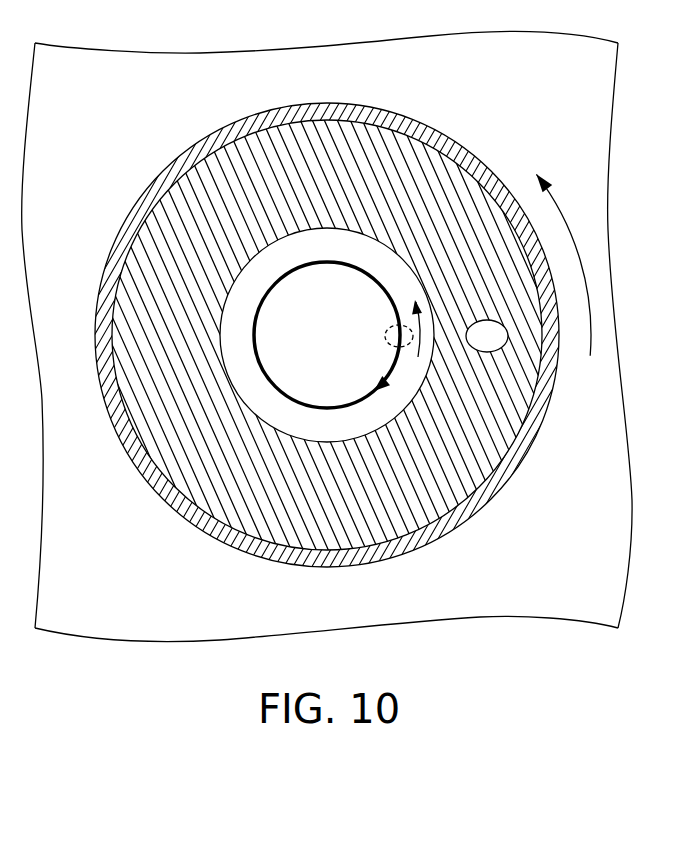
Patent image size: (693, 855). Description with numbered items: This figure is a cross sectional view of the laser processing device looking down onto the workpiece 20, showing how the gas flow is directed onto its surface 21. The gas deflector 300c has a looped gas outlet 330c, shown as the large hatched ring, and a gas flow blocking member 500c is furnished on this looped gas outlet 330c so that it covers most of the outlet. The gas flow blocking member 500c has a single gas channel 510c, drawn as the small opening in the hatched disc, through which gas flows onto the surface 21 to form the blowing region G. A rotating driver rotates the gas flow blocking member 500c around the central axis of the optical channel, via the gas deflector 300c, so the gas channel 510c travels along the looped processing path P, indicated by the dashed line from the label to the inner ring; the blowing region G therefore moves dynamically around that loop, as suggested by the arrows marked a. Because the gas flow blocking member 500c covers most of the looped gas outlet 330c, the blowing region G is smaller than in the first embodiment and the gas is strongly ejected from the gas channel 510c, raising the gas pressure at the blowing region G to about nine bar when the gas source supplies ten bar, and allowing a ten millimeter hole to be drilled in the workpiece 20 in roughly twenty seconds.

The workpiece 20 is at (598, 98).
The surface 21 is at (582, 150).
The gas deflector 300c is at (185, 158).
The looped gas outlet 330c is at (163, 207).
The gas flow blocking member 500c is at (513, 427).
The gas channel 510c is at (493, 340).
The looped processing path P is at (327, 262).
The blowing region G is at (406, 324).
The rotation direction a is at (502, 265).